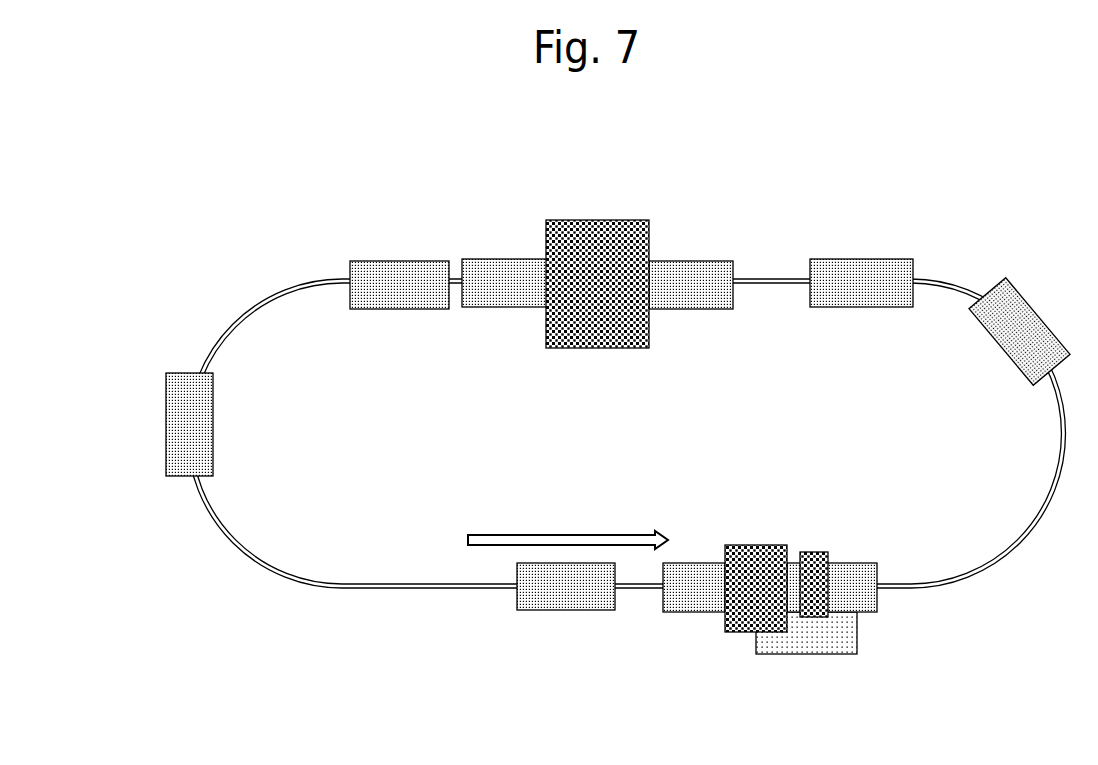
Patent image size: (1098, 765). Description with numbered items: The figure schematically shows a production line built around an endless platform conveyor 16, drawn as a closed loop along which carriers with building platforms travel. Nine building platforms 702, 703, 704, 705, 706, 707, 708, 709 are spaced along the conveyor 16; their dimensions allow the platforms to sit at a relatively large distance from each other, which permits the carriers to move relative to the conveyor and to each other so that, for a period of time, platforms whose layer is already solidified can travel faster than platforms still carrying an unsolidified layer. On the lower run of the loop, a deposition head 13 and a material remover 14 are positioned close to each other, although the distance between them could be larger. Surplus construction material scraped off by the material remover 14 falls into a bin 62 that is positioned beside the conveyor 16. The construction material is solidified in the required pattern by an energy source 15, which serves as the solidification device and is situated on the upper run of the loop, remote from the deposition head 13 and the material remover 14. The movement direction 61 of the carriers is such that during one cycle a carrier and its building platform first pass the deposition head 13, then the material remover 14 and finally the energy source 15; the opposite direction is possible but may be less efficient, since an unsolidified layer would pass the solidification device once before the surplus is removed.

The deposition head 13 is at (738, 634).
The material remover 14 is at (815, 551).
The energy source 15 is at (598, 220).
The endless platform conveyor 16 is at (330, 623).
The movement direction 61 is at (547, 532).
The bin 62 is at (830, 656).
The building platform 702 is at (515, 258).
The building platform 703 is at (387, 260).
The building platform 704 is at (833, 259).
The building platform 705 is at (1014, 282).
The building platform 706 is at (874, 614).
The building platform 707 is at (687, 614).
The building platform 708 is at (567, 612).
The building platform 709 is at (216, 450).